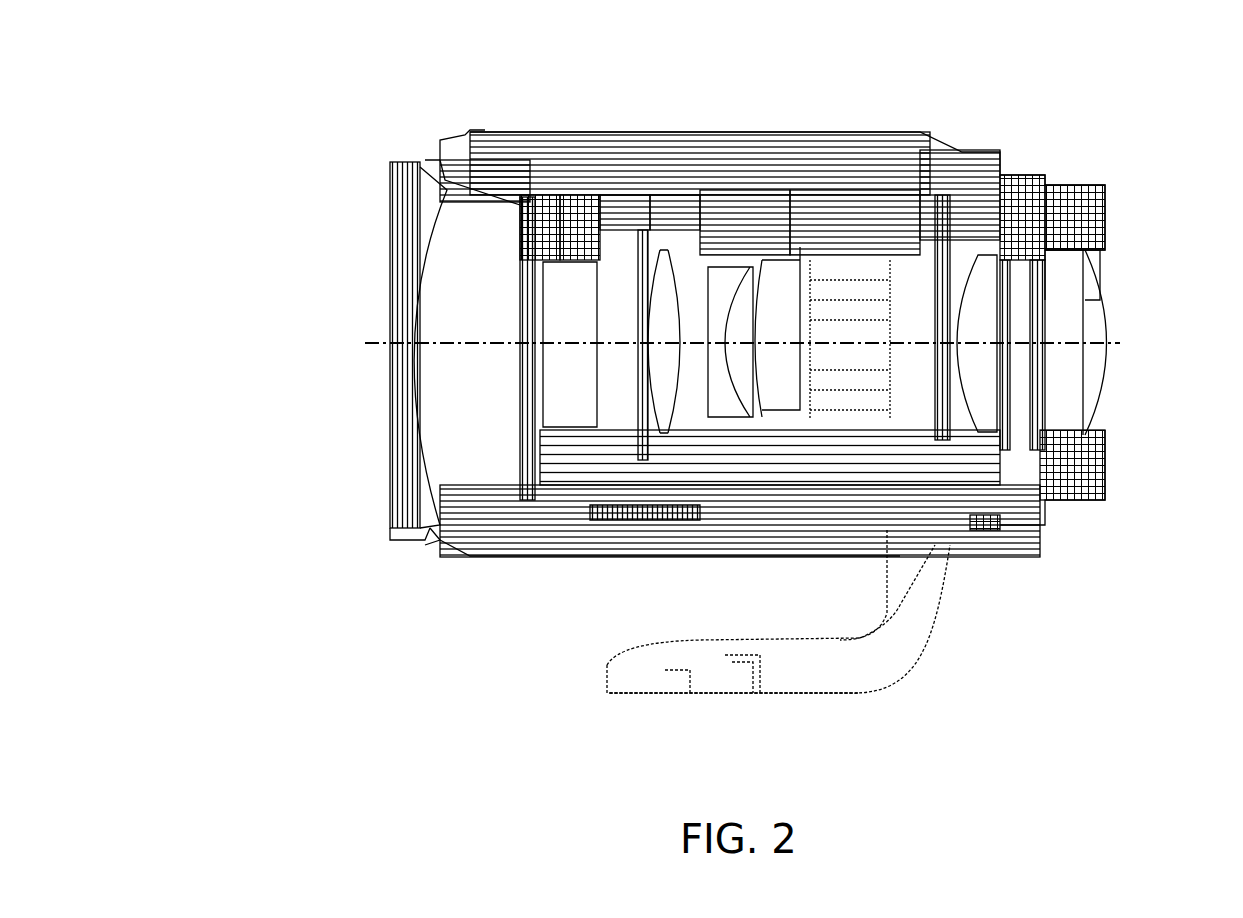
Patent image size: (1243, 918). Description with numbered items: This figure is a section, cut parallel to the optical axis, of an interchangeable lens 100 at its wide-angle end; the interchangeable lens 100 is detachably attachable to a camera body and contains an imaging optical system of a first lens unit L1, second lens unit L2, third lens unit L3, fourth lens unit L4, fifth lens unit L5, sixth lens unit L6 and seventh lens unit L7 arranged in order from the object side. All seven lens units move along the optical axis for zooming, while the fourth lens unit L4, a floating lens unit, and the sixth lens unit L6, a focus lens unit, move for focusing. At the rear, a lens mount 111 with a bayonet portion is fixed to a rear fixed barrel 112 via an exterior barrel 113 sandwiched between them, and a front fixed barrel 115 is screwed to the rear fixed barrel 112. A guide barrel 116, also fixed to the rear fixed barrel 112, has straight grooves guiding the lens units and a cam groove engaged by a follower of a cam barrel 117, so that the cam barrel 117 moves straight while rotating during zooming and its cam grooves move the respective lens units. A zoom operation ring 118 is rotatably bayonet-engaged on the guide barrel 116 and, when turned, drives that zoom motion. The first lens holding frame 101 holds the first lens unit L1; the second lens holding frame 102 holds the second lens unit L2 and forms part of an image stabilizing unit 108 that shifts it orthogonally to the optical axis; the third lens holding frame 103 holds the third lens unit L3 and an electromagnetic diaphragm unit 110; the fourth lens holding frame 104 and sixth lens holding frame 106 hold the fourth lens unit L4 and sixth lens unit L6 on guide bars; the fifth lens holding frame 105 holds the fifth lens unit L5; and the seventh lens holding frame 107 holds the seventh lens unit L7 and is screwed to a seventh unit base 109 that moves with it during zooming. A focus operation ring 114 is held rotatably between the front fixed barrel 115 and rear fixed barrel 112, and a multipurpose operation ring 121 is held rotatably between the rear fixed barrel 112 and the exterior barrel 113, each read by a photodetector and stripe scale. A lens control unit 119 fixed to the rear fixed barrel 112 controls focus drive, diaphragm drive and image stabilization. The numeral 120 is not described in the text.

The interchangeable lens 100 is at (338, 110).
The first lens holding frame 101 is at (448, 142).
The second lens holding frame 102 is at (562, 150).
The third lens holding frame 103 is at (672, 150).
The fourth lens holding frame 104 is at (745, 150).
The fifth lens holding frame 105 is at (818, 150).
The sixth lens holding frame 106 is at (957, 250).
The seventh lens holding frame 107 is at (1070, 250).
The image stabilizing unit 108 is at (528, 150).
The seventh unit base 109 is at (1017, 230).
The electromagnetic diaphragm unit 110 is at (632, 150).
The lens mount 111 is at (1085, 213).
The rear fixed barrel 112 is at (947, 145).
The exterior barrel 113 is at (1020, 228).
The focus operation ring 114 is at (820, 548).
The front fixed barrel 115 is at (757, 545).
The guide barrel 116 is at (602, 530).
The cam barrel 117 is at (558, 540).
The zoom operation ring 118 is at (508, 540).
The lens control unit 119 is at (1043, 503).
The front cover 120 is at (423, 543).
The multipurpose operation ring 121 is at (990, 530).
The first lens unit L1 is at (447, 213).
The second lens unit L2 is at (560, 282).
The third lens unit L3 is at (724, 341).
The fourth lens unit L4 is at (740, 313).
The fifth lens unit L5 is at (830, 335).
The sixth lens unit L6 is at (945, 322).
The seventh lens unit L7 is at (1058, 348).